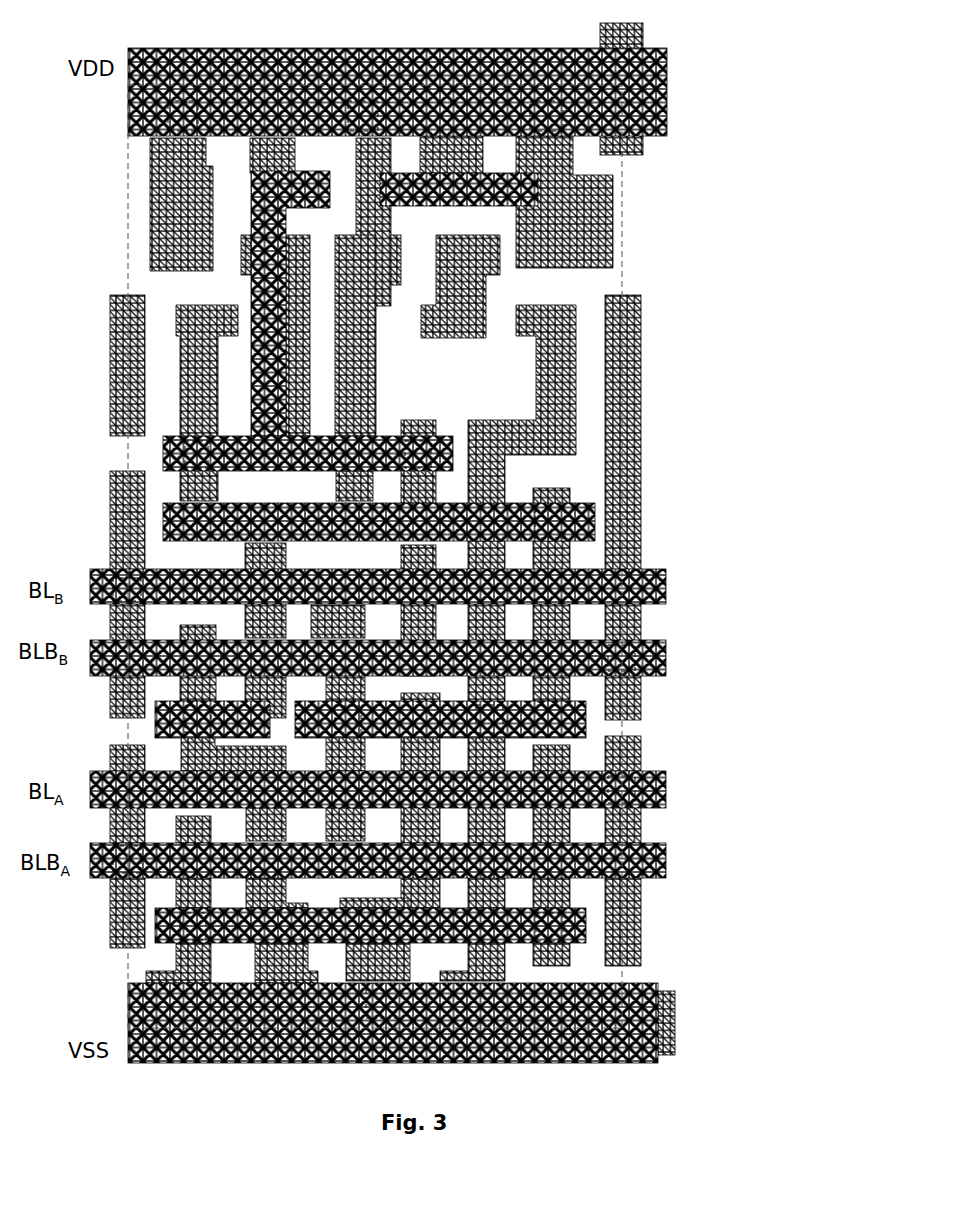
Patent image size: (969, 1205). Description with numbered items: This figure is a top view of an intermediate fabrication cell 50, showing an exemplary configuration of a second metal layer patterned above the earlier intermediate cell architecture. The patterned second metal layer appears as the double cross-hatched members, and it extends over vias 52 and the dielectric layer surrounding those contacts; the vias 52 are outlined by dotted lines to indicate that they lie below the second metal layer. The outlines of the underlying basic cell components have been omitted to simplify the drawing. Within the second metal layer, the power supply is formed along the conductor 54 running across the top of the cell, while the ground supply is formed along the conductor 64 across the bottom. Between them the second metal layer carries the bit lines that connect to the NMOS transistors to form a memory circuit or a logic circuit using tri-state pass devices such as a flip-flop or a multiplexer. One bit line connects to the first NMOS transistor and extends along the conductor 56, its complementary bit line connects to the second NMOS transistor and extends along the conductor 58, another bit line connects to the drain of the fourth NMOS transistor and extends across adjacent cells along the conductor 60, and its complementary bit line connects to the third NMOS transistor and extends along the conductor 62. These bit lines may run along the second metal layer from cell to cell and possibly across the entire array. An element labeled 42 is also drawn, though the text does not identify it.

The via 42 is at (603, 27).
The intermediate fabrication cell 50 is at (755, 58).
The vias 52 is at (560, 117).
The conductor 54 is at (659, 78).
The conductor 56 is at (658, 577).
The conductor 58 is at (658, 645).
The conductor 60 is at (658, 780).
The conductor 62 is at (657, 848).
The conductor 64 is at (633, 982).